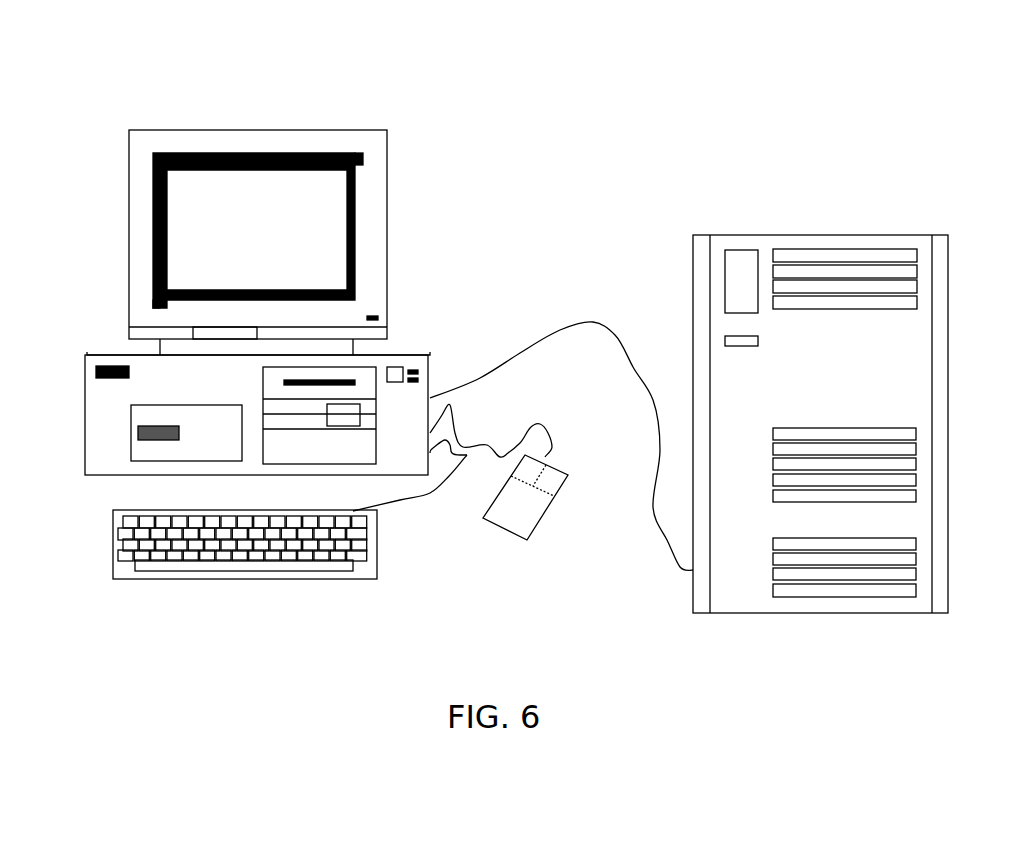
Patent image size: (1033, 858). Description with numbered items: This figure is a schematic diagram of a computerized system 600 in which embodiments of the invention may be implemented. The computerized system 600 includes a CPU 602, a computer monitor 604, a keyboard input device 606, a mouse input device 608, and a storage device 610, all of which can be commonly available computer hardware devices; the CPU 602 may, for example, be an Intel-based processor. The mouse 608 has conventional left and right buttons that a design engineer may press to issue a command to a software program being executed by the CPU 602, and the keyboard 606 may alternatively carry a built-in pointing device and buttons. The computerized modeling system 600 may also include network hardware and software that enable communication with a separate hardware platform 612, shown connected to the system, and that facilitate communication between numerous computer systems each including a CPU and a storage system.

The computerized system 600 is at (419, 50).
The CPU 602 is at (138, 433).
The computer monitor 604 is at (337, 227).
The keyboard input device 606 is at (113, 556).
The mouse input device 608 is at (517, 517).
The storage device 610 is at (352, 447).
The hardware platform 612 is at (757, 235).